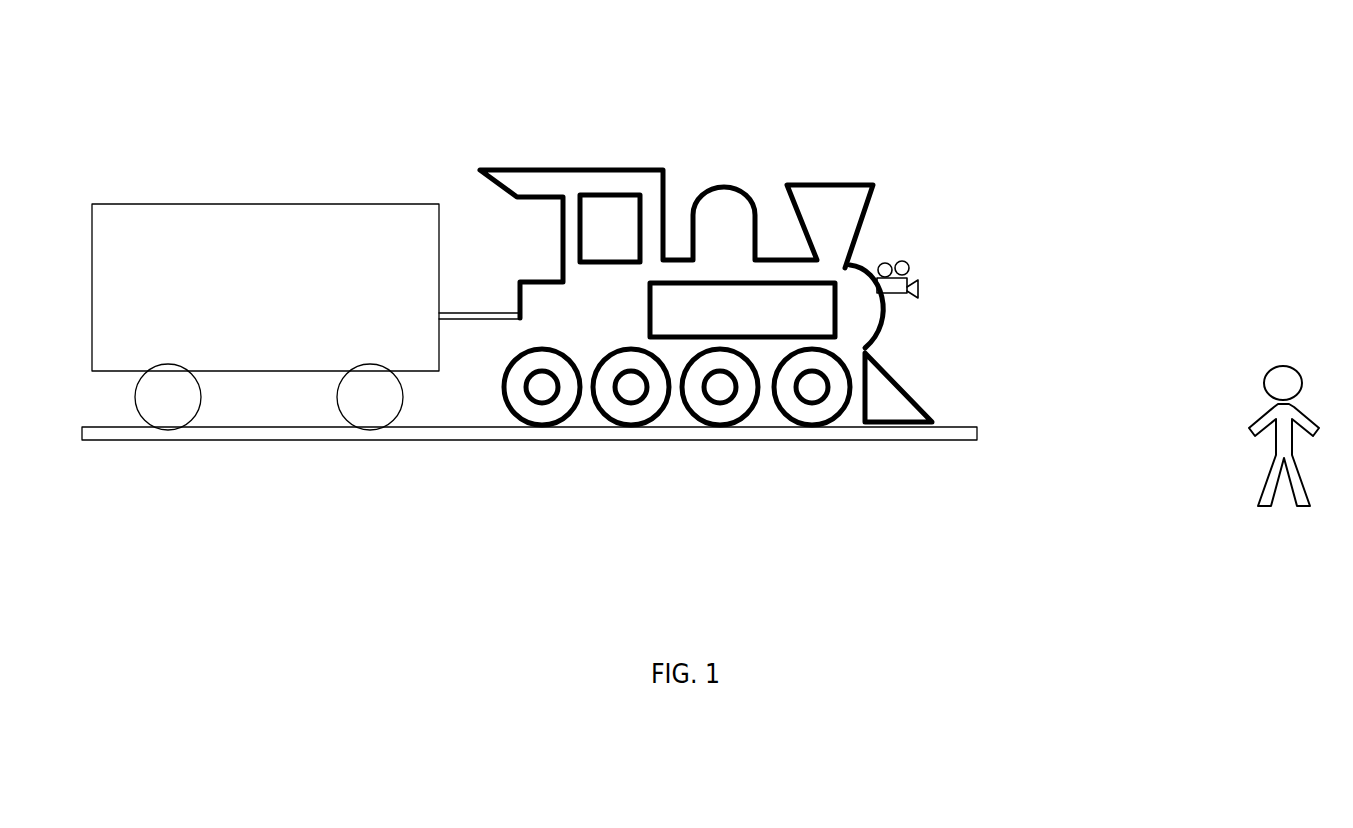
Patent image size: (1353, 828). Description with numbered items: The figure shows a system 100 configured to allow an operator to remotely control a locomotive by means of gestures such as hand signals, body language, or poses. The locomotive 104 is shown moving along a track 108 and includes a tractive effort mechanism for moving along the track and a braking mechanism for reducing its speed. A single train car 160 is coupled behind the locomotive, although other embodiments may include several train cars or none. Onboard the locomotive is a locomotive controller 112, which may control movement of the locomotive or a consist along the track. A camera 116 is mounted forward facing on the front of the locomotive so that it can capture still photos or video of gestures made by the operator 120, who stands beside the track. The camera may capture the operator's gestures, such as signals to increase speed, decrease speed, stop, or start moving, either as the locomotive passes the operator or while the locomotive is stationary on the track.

The system 100 is at (1127, 127).
The locomotive 104 is at (710, 261).
The track 108 is at (843, 440).
The locomotive controller 112 is at (840, 281).
The camera 116 is at (913, 272).
The operator 120 is at (1277, 438).
The train car 160 is at (367, 202).